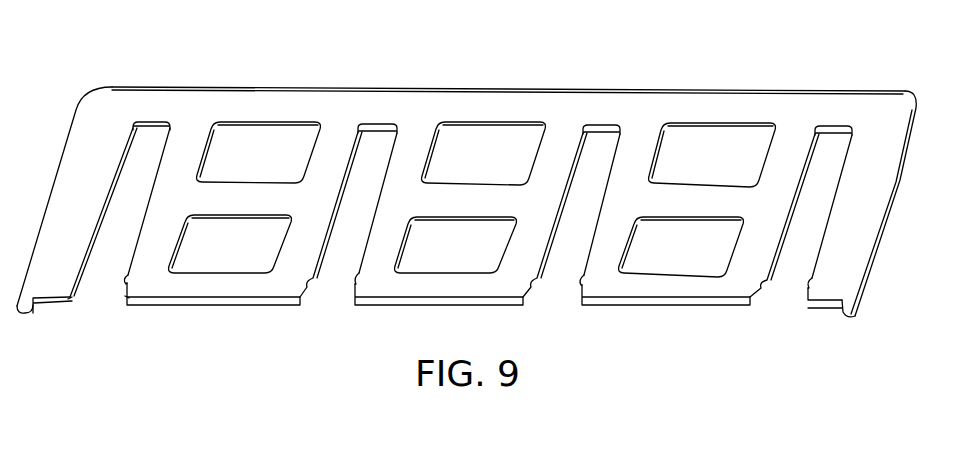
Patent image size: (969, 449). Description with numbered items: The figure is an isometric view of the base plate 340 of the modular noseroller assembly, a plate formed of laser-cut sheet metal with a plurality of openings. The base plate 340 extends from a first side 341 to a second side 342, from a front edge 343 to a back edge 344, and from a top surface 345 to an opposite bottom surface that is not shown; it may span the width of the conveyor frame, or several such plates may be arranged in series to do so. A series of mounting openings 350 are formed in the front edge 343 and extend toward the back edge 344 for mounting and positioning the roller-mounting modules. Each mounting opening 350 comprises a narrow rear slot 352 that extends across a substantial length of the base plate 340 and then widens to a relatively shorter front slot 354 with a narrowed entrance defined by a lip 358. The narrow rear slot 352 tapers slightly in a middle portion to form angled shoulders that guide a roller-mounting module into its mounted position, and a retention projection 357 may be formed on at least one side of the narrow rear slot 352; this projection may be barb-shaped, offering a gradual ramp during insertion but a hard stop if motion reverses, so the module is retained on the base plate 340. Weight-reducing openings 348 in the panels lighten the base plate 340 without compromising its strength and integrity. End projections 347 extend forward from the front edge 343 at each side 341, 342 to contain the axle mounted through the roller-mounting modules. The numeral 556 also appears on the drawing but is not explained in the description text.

The base plate 340 is at (572, 73).
The first side 341 is at (58, 175).
The second side 342 is at (878, 204).
The front edge 343 is at (424, 309).
The back edge 344 is at (396, 79).
The top surface 345 is at (210, 109).
The end projections 347 is at (28, 320).
The weight-reducing openings 348 is at (272, 167).
The mounting openings 350 is at (106, 310).
The narrow rear slot 352 is at (143, 153).
The front slot 354 is at (118, 285).
The retention projection 357 is at (160, 153).
The lip 358 is at (71, 300).
The slot wall 556 is at (563, 197).